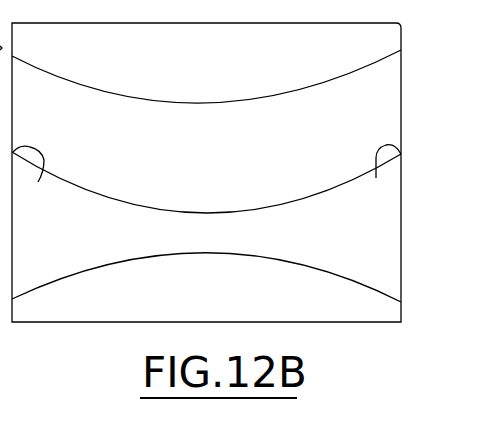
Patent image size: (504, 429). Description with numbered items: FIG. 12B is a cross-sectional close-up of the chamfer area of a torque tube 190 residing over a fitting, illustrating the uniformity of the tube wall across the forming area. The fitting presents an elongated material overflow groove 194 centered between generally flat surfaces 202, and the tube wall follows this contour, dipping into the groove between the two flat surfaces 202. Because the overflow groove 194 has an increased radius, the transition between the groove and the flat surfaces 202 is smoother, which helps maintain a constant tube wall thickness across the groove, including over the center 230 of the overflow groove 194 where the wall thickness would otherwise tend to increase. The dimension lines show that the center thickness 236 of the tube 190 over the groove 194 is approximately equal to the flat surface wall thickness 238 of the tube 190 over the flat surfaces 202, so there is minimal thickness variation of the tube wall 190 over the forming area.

The torque tube 190 is at (394, 78).
The elongated material overflow groove 194 is at (282, 202).
The flat surface 202 is at (207, 180).
The center of the overflow groove 230 is at (207, 212).
The center thickness 236 is at (204, 102).
The flat surface wall thickness 238 is at (19, 57).